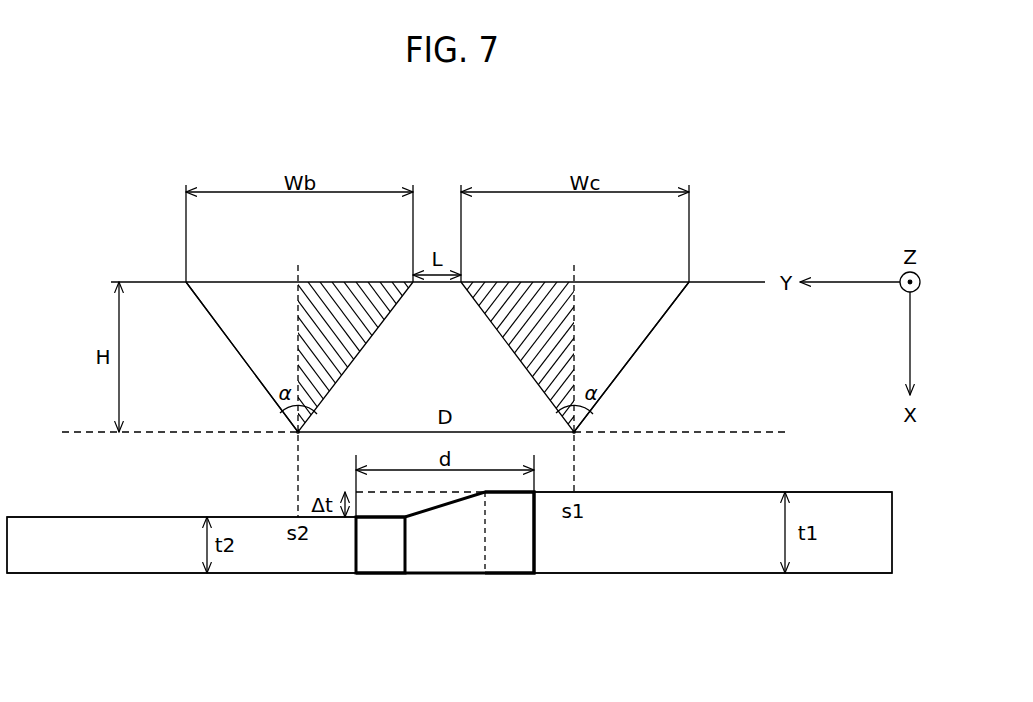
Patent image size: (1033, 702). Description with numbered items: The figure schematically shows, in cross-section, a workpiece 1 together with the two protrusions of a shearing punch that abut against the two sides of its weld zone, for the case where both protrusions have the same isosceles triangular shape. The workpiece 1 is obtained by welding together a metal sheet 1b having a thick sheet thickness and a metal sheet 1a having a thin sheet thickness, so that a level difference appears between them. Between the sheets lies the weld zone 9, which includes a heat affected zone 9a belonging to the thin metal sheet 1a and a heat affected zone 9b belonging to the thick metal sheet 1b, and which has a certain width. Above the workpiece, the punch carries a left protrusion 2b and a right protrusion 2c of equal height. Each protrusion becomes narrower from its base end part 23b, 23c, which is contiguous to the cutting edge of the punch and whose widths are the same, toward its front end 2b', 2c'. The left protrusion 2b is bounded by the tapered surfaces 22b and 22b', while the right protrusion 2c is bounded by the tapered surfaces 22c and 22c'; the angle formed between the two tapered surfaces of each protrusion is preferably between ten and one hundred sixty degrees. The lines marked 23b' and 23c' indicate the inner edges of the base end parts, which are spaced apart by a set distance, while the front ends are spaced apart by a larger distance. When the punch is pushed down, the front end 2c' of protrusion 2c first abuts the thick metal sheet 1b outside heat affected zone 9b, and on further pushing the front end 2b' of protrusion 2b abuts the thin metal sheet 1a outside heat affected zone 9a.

The workpiece 1 is at (877, 567).
The metal sheet 1a is at (115, 565).
The metal sheet 1b is at (680, 567).
The weld zone 9 is at (455, 567).
The heat affected zone 9a is at (383, 567).
The heat affected zone 9b is at (519, 567).
The protrusion 2b is at (299, 322).
The protrusion 2c is at (575, 322).
The front end 2b' is at (263, 460).
The front end 2c' is at (631, 454).
The tapered surface 22b is at (352, 357).
The tapered surface 22c is at (511, 357).
The tapered surface 22b' is at (220, 357).
The tapered surface 22c' is at (667, 357).
The base end part 23b is at (325, 363).
The base end part 23c is at (563, 351).
The first bead inner edge 23b' is at (388, 205).
The second bead inner edge 23c' is at (492, 205).